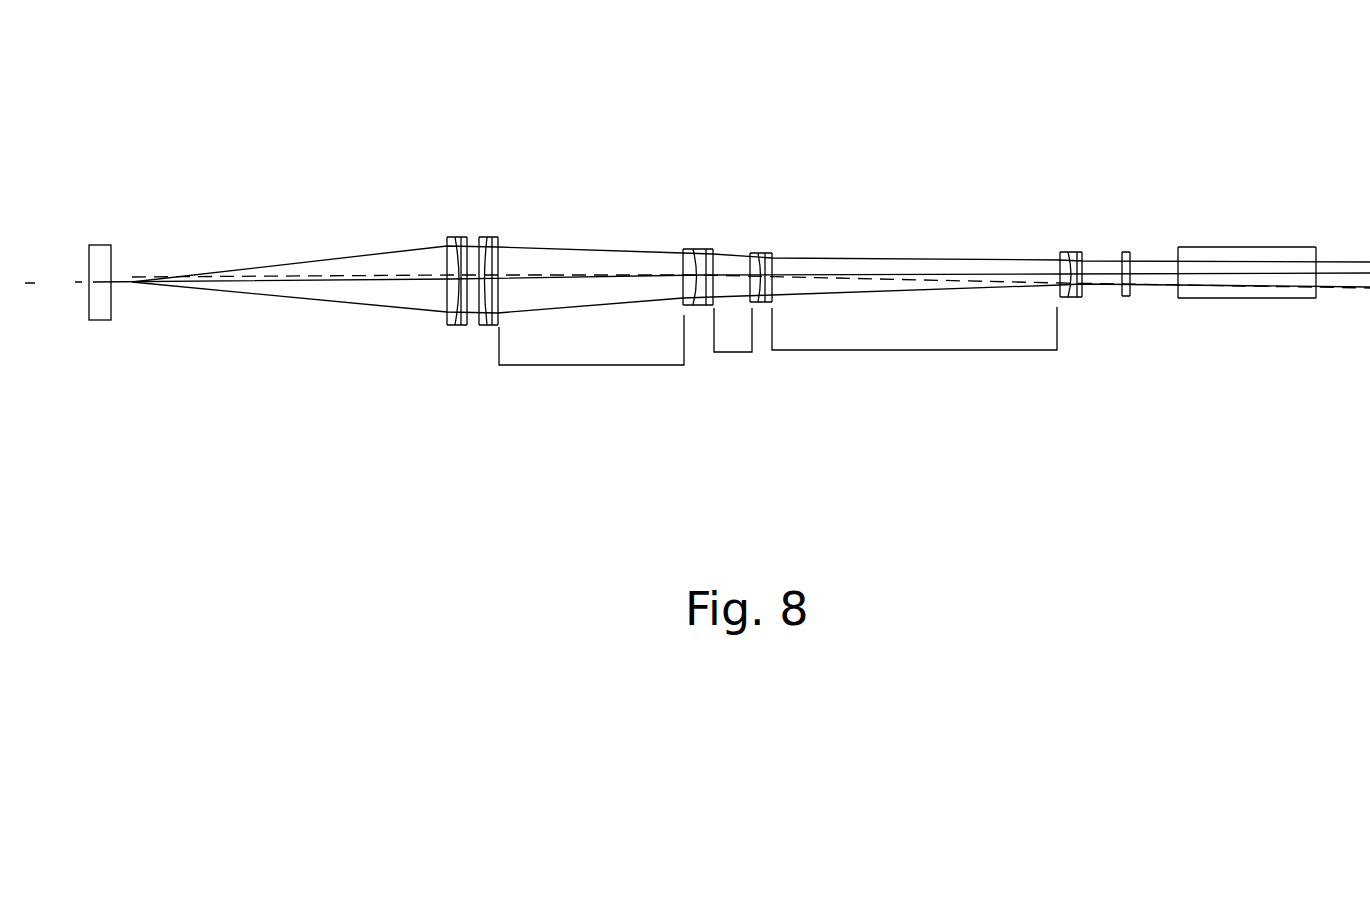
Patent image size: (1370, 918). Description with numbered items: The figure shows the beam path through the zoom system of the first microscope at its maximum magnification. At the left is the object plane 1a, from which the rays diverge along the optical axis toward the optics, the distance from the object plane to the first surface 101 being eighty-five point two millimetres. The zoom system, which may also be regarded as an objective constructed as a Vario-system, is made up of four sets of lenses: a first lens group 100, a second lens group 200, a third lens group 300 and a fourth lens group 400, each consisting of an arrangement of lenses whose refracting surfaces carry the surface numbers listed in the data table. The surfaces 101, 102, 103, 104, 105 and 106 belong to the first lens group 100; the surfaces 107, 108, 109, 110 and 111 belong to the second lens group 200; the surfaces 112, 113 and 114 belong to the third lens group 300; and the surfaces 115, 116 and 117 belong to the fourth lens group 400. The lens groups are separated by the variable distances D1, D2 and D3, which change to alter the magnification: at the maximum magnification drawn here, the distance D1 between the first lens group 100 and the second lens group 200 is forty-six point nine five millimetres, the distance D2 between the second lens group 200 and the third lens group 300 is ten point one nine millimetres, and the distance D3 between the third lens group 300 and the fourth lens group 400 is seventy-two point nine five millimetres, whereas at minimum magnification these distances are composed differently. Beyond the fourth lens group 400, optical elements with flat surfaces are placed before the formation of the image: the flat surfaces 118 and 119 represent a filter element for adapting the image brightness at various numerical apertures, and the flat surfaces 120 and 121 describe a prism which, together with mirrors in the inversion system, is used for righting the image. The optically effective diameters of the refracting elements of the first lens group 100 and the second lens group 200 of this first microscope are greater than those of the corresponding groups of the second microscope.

The object plane / reticle 1a is at (105, 310).
The first lens group 100 is at (442, 256).
The surface 101 is at (437, 245).
The surface 102 is at (456, 245).
The surface 103 is at (467, 245).
The surface 104 is at (468, 250).
The surface 105 is at (495, 245).
The surface 106 is at (510, 245).
The surface 107 is at (683, 263).
The surface 108 is at (700, 265).
The surface 109 is at (702, 263).
The surface 110 is at (710, 265).
The surface 111 is at (755, 265).
The surface 112 is at (760, 265).
The surface 113 is at (770, 265).
The surface 114 is at (780, 267).
The surface 115 is at (1057, 265).
The surface 116 is at (1062, 262).
The surface 117 is at (1080, 252).
The filter element surface 118 is at (1124, 252).
The filter element surface 119 is at (1131, 256).
The prism surface 120 is at (1180, 250).
The prism surface 121 is at (1316, 248).
The second lens group 200 is at (685, 270).
The third lens group 300 is at (845, 306).
The fourth lens group 400 is at (1053, 271).
The variable distance D1 is at (593, 365).
The variable distance D2 is at (735, 352).
The variable distance D3 is at (920, 350).